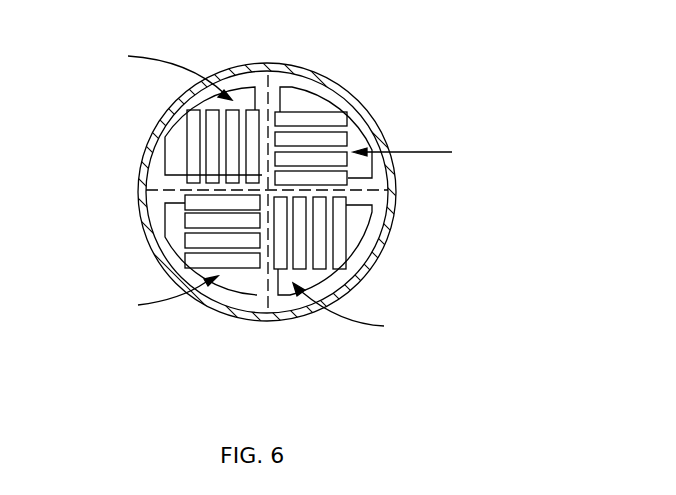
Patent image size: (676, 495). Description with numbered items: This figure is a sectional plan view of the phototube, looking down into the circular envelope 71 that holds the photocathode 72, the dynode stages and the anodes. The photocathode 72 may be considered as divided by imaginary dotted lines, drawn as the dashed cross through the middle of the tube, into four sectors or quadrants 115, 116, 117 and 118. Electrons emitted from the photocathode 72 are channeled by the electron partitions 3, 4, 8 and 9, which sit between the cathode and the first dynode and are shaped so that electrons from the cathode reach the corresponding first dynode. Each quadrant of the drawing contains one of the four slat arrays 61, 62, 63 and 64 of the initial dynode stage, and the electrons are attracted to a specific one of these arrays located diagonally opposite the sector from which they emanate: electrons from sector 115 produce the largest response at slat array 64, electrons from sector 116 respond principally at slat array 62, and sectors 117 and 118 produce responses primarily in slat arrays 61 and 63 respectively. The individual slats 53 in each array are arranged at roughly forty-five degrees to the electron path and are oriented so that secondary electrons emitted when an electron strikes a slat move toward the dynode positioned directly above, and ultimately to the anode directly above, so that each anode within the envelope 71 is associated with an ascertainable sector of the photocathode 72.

The electron partition 3 is at (228, 278).
The electron partition 4 is at (312, 280).
The electron partition 8 is at (238, 100).
The electron partition 9 is at (318, 105).
The dynode slats 53 is at (310, 118).
The slat array 61 is at (166, 70).
The slat array 62 is at (164, 295).
The slat array 63 is at (414, 155).
The slat array 64 is at (349, 310).
The envelope 71 is at (395, 217).
The photocathode 72 is at (377, 186).
The photocathode sector 115 is at (165, 150).
The photocathode sector 116 is at (357, 123).
The photocathode sector 117 is at (368, 242).
The photocathode sector 118 is at (243, 302).